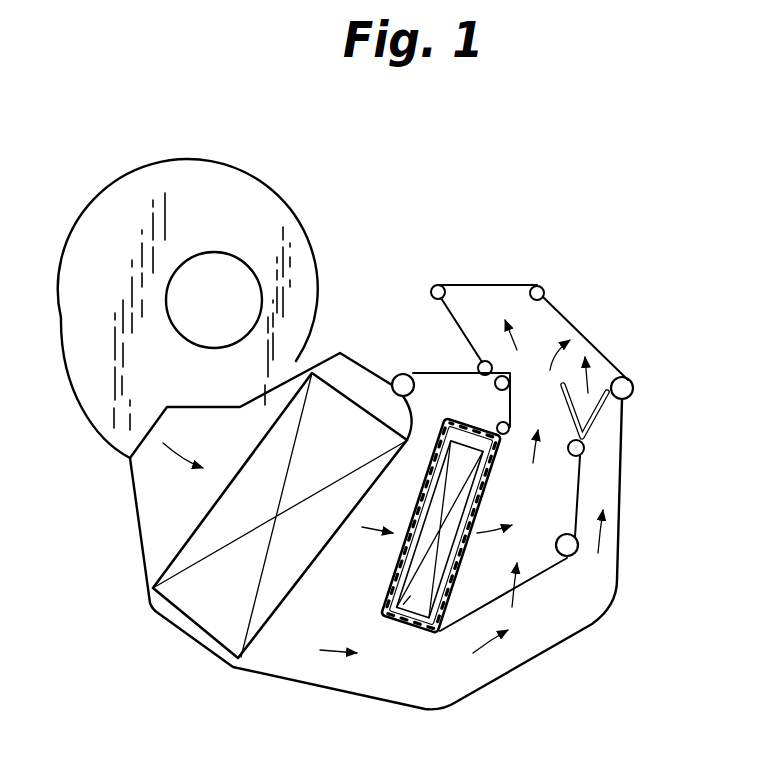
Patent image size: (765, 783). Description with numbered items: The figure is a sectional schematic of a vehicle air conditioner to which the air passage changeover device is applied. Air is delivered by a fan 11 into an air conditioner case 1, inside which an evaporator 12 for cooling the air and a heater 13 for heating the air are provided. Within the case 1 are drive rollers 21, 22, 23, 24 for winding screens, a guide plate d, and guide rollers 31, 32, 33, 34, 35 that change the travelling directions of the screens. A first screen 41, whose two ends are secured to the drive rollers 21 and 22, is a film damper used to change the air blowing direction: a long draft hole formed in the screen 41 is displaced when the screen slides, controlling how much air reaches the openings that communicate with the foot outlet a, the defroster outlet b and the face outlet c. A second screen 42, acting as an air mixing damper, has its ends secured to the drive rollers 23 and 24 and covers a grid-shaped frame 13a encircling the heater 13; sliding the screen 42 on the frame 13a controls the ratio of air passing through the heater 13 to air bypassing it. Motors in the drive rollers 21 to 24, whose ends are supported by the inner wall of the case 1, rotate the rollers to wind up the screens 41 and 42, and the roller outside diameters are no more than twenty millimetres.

The air conditioner case 1 is at (454, 713).
The fan 11 is at (203, 182).
The evaporator 12 is at (218, 620).
The heater 13 is at (403, 622).
The grid-shaped frame 13a is at (387, 608).
The drive roller 21 is at (393, 377).
The drive roller 22 is at (633, 387).
The drive roller 23 is at (495, 388).
The drive roller 24 is at (582, 456).
The guide roller 31 is at (478, 364).
The guide roller 32 is at (437, 284).
The guide roller 33 is at (547, 290).
The guide roller 34 is at (507, 434).
The guide roller 35 is at (575, 557).
The first screen 41 is at (512, 283).
The second screen 42 is at (547, 562).
The foot outlet a is at (412, 347).
The defroster outlet b is at (489, 275).
The face outlet c is at (603, 322).
The guide plate d is at (600, 420).